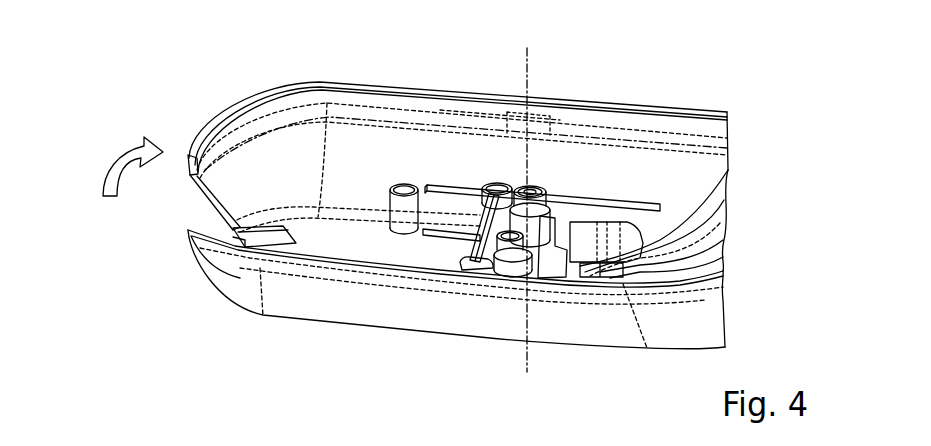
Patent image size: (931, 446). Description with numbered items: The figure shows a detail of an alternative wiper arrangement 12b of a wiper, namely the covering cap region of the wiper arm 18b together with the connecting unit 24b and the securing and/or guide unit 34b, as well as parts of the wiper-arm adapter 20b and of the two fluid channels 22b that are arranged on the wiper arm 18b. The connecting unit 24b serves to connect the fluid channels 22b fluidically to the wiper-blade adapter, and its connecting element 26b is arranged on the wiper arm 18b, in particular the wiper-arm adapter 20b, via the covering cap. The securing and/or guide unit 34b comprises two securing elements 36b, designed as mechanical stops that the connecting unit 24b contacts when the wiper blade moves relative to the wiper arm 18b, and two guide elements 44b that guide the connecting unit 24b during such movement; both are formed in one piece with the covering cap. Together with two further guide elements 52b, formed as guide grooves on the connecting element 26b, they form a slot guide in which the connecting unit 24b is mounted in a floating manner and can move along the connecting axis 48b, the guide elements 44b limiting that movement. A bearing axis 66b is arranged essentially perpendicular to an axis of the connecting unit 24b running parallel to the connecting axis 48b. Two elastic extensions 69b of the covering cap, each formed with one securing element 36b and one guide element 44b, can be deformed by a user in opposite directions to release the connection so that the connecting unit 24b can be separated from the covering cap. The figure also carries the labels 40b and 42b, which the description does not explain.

The wiper arrangement 12b is at (222, 77).
The wiper arm 18b is at (658, 370).
The wiper-arm adapter 20b is at (305, 72).
The fluid channels 22b is at (713, 198).
The connecting unit 24b is at (617, 86).
The connecting element 26b is at (550, 212).
The securing and/or guide unit 34b is at (486, 62).
The securing elements 36b is at (483, 188).
The guide elements 44b is at (479, 231).
The upper edge 40b is at (730, 152).
The opening direction arrow 42b is at (135, 146).
The connecting axis 48b is at (528, 58).
The further guide elements 52b is at (497, 268).
The bearing axis 66b is at (467, 278).
The extensions 69b is at (520, 187).